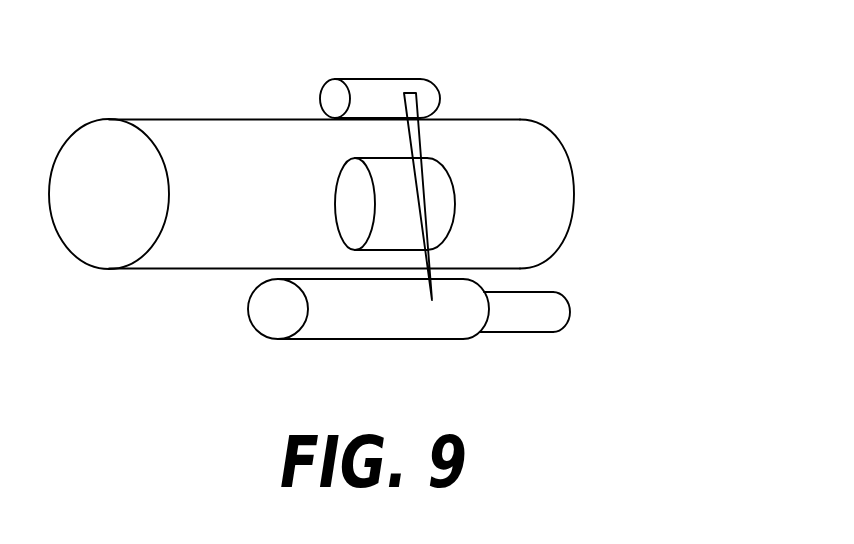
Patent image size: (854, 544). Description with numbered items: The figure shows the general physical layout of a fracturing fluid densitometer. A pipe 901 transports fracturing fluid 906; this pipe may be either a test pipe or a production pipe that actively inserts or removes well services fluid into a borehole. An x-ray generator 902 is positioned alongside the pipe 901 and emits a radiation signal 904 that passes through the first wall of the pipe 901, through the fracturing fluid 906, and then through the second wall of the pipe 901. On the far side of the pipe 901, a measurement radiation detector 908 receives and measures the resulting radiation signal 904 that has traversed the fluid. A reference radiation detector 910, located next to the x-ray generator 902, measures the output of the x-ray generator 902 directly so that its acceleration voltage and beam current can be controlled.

The pipe 901 is at (588, 200).
The x-ray generator 902 is at (240, 313).
The radiation signal 904 is at (434, 180).
The fracturing fluid 906 is at (348, 190).
The measurement radiation detector 908 is at (453, 98).
The reference radiation detector 910 is at (584, 310).